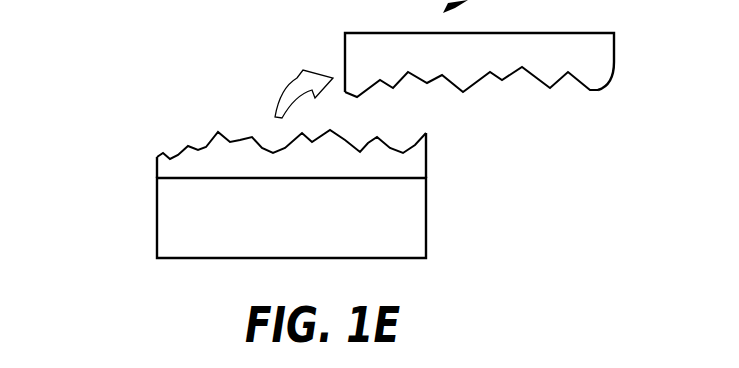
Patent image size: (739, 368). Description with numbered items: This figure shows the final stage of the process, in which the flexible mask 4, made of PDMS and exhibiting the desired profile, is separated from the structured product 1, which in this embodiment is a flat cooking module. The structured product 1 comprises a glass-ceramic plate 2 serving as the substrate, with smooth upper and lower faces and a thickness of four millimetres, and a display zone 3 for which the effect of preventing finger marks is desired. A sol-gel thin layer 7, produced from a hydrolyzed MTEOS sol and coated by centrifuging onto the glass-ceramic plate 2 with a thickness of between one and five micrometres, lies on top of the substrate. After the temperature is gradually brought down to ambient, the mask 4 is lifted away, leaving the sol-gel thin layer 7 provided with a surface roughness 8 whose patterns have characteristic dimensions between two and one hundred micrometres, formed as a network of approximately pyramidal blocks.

The structured product 1 is at (108, 236).
The glass-ceramic plate 2 is at (410, 238).
The display zone 3 is at (410, 177).
The flexible mask 4 is at (600, 55).
The sol-gel thin layer 7 is at (190, 163).
The surface roughness 8 is at (219, 120).